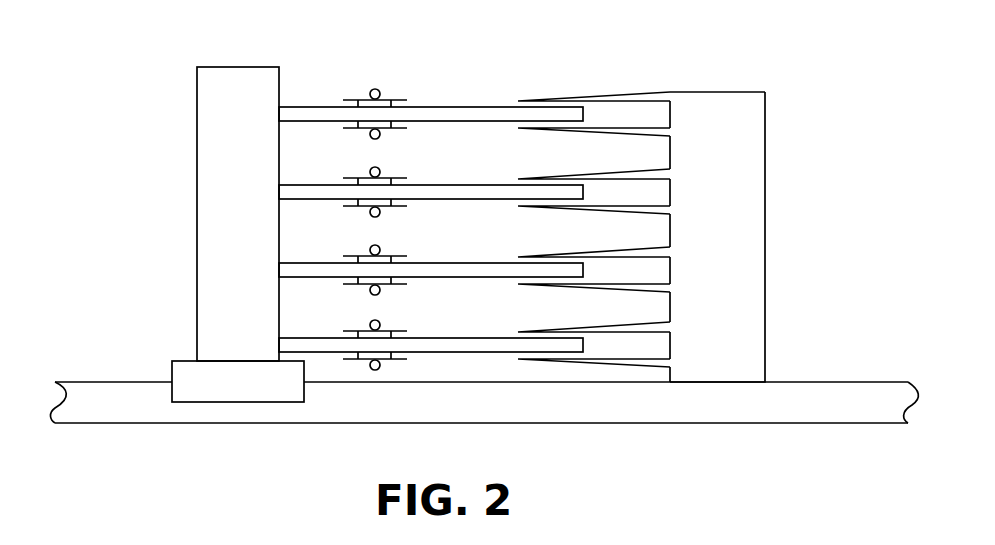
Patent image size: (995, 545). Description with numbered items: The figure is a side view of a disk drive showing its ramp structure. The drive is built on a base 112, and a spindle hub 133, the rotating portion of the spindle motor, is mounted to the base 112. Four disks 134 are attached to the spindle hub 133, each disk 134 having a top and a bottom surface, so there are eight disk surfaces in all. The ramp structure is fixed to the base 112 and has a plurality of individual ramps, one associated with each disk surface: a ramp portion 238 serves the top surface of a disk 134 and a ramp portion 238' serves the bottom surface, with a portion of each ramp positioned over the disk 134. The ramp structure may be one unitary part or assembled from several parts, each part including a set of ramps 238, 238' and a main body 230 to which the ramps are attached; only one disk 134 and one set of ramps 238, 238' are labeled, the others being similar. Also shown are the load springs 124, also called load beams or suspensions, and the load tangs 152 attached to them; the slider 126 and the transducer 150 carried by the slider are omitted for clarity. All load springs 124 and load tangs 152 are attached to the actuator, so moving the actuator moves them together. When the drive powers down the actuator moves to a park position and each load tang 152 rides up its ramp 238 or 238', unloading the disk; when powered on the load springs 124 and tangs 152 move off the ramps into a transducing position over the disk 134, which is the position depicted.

The base 112 is at (793, 382).
The spindle hub 133 is at (185, 361).
The disk 134 is at (477, 107).
The transducer 150 is at (379, 85).
The load tang 152 is at (377, 89).
The slider 126 is at (389, 100).
The load spring 124 is at (393, 130).
The ramp portion 238 is at (641, 67).
The ramp portion 238' is at (586, 151).
The main body 230 is at (765, 163).